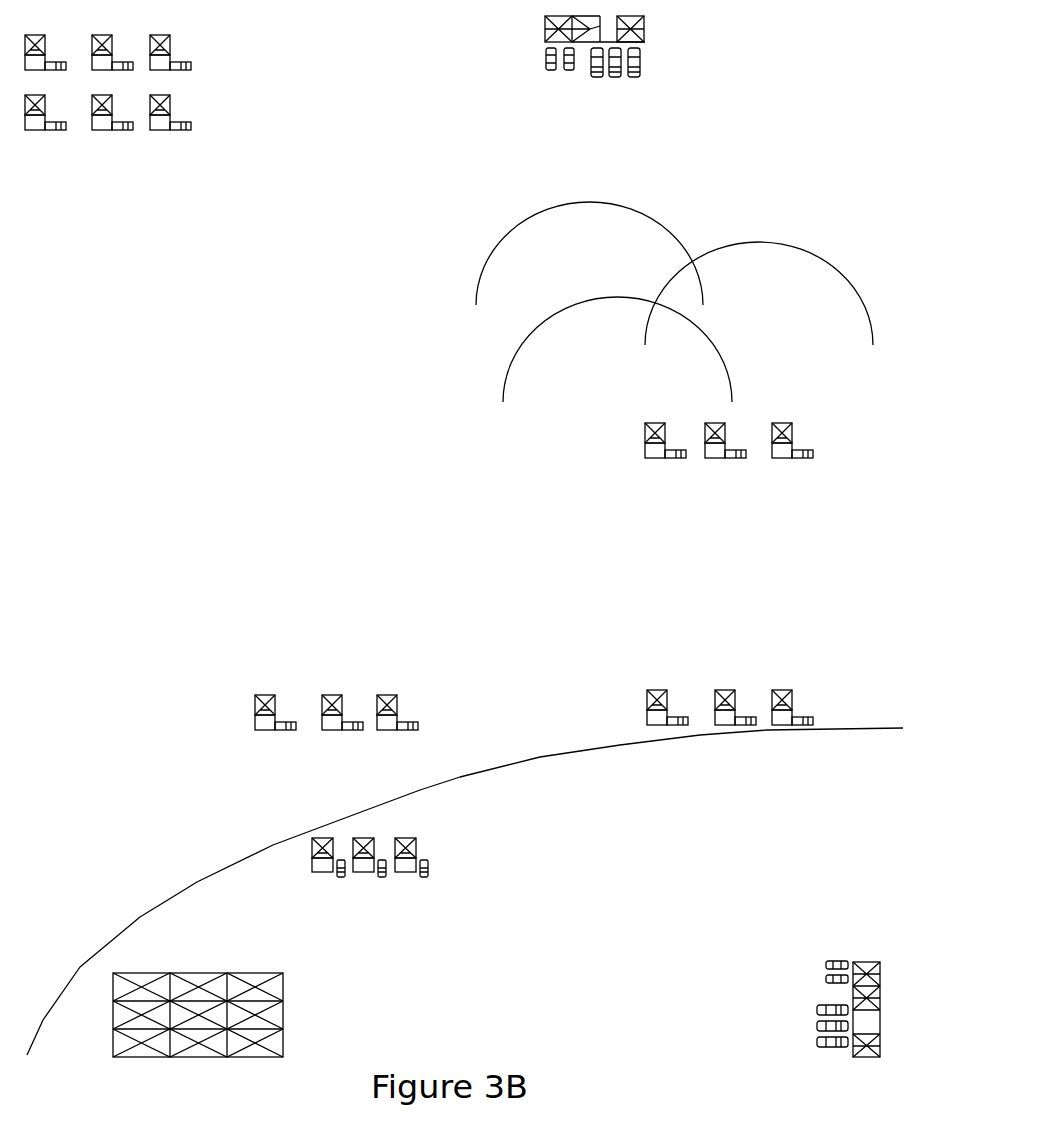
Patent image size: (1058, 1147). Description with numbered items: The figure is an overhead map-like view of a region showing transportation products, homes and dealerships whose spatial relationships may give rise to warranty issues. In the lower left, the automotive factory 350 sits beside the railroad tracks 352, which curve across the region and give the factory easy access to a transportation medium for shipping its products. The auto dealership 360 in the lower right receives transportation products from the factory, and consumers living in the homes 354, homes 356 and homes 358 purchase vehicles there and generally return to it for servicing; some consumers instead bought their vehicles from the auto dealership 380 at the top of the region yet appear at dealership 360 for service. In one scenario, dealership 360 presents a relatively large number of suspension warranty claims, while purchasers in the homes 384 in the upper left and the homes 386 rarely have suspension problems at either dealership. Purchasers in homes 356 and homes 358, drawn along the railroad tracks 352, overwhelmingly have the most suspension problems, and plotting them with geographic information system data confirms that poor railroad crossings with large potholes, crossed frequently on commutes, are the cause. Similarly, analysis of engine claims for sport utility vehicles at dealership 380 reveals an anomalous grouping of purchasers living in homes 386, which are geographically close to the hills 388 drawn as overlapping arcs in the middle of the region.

The automotive factory 350 is at (198, 995).
The railroad tracks 352 is at (212, 853).
The homes 354 is at (437, 875).
The homes 356 is at (423, 731).
The homes 358 is at (818, 725).
The auto dealership 360 is at (848, 1032).
The auto dealership 380 is at (633, 46).
The homes 384 is at (197, 28).
The homes 386 is at (818, 457).
The hills 388 is at (674, 302).